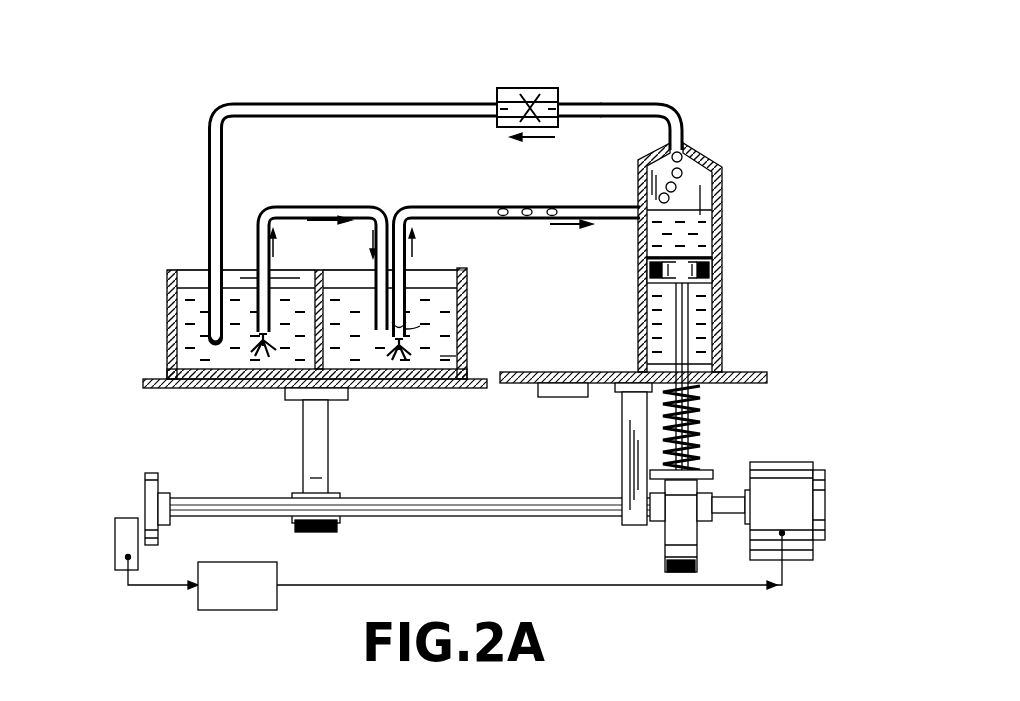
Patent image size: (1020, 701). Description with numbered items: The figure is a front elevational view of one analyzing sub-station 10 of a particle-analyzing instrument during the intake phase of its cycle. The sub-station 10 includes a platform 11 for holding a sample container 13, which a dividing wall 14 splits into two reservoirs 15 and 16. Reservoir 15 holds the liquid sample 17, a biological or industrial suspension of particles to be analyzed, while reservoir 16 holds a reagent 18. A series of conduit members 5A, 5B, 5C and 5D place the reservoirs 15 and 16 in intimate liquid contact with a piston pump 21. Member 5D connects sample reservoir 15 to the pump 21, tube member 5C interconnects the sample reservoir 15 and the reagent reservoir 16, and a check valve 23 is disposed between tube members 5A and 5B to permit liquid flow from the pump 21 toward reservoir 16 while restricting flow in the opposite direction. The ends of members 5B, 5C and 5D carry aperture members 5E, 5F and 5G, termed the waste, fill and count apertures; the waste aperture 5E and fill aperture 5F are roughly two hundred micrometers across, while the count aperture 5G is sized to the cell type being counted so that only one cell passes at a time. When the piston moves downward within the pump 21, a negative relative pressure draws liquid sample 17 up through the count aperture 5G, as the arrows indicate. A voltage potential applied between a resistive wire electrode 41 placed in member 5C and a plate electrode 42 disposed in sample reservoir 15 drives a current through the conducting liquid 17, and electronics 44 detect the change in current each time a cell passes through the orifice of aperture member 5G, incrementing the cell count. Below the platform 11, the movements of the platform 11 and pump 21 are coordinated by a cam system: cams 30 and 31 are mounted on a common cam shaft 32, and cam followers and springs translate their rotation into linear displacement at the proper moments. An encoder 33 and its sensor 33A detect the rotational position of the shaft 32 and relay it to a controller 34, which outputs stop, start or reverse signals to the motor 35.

The conduit member 5A is at (622, 101).
The tube member 5B is at (397, 102).
The tube member 5C is at (320, 206).
The conduit member 5D is at (470, 205).
The waste aperture 5E is at (217, 343).
The fill aperture 5F is at (258, 357).
The count aperture 5G is at (395, 361).
The analyzing sub-station 10 is at (197, 243).
The platform 11 is at (143, 389).
The sample container 13 is at (170, 362).
The dividing wall 14 is at (327, 287).
The reservoir 15 is at (443, 275).
The reservoir 16 is at (281, 283).
The liquid sample 17 is at (447, 355).
The reagent 18 is at (183, 312).
The piston pump 21 is at (725, 170).
The check valve 23 is at (535, 88).
The cam 30 is at (317, 535).
The cam 31 is at (683, 572).
The cam shaft 32 is at (460, 517).
The encoder 33 is at (160, 490).
The sensor 33A is at (113, 572).
The controller 34 is at (238, 608).
The motor 35 is at (802, 552).
The resistive wire electrode 41 is at (413, 331).
The plate electrode 42 is at (407, 320).
The electronics 44 is at (563, 398).